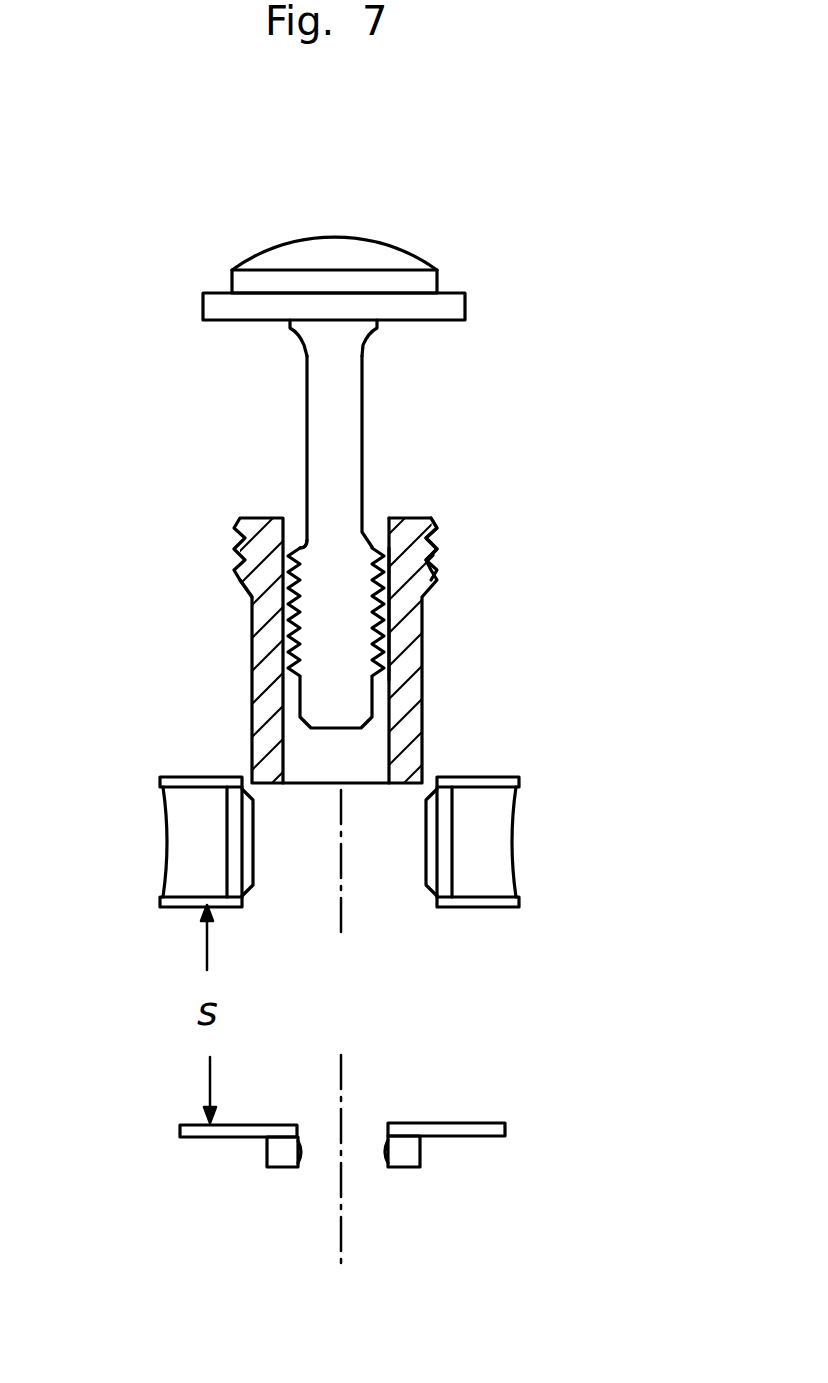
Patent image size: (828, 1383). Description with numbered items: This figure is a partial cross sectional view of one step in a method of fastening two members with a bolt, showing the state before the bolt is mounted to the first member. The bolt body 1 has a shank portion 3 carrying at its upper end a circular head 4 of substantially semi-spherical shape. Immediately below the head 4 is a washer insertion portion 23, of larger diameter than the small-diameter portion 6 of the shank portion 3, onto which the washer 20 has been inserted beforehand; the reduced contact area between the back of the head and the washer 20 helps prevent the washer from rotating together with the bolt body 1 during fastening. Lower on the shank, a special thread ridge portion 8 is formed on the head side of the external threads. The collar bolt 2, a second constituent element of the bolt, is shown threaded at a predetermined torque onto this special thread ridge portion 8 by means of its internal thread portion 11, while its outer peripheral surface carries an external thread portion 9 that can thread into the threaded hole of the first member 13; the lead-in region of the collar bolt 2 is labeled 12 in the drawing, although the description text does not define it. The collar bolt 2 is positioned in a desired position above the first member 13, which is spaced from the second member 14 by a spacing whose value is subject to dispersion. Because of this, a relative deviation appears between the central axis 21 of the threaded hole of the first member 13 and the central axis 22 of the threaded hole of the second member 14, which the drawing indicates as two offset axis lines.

The bolt body 1 is at (331, 428).
The collar bolt 2 is at (428, 680).
The shank portion 3 is at (365, 390).
The circular head 4 is at (364, 259).
The small-diameter portion 6 is at (307, 440).
The special thread ridge portion 8 is at (405, 568).
The external thread portion 9 is at (436, 540).
The internal thread portion 11 is at (308, 552).
The tapered portion of nut 12 is at (241, 593).
The first member 13 is at (489, 836).
The second member 14 is at (472, 1128).
The washer 20 is at (470, 292).
The central axis 21 is at (341, 875).
The central axis 22 is at (343, 1222).
The washer insertion portion 23 is at (290, 327).